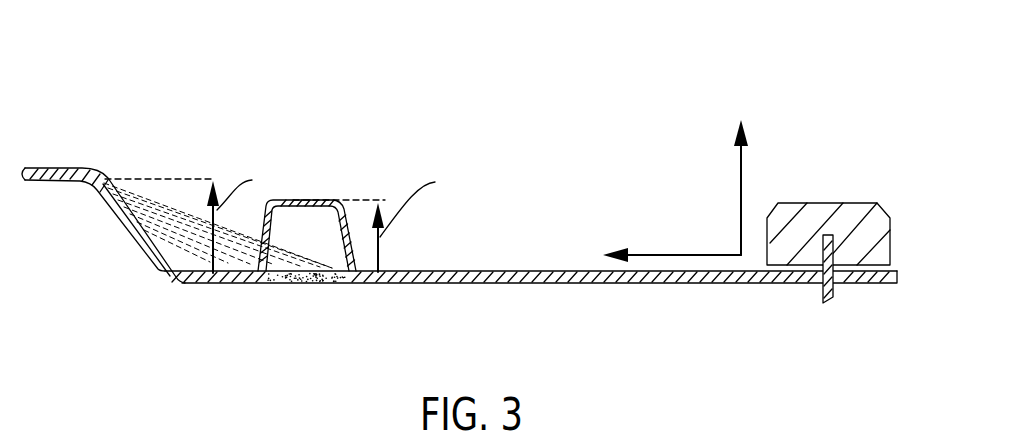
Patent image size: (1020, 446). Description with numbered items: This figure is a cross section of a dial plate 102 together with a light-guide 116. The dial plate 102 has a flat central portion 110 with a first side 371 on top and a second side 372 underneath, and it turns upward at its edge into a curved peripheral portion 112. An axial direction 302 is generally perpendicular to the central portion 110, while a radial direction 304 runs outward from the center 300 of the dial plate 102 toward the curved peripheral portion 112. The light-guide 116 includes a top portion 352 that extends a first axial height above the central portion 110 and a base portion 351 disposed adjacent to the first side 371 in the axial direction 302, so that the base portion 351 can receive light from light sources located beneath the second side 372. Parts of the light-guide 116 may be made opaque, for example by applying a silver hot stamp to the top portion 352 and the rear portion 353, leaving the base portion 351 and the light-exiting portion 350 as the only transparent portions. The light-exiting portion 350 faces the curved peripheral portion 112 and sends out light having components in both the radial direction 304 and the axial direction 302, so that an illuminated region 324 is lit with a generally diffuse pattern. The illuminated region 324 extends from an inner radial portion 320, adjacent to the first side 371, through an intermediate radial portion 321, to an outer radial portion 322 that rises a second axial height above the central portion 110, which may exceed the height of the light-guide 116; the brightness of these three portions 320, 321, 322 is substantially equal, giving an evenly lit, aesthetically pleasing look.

The dial plate 102 is at (574, 72).
The central portion 110 is at (518, 262).
The curved peripheral portion 112 is at (45, 167).
The light-guide 116 is at (301, 170).
The center 300 is at (829, 175).
The axial direction 302 is at (719, 187).
The radial direction 304 is at (672, 246).
The inner radial portion 320 is at (172, 253).
The intermediate radial portion 321 is at (150, 222).
The outer radial portion 322 is at (101, 189).
The illuminated region 324 is at (128, 348).
The light-exiting portion 350 is at (260, 264).
The base portion 351 is at (305, 283).
The top portion 352 is at (320, 200).
The rear portion 353 is at (348, 233).
The first side 371 is at (420, 270).
The second side 372 is at (410, 285).